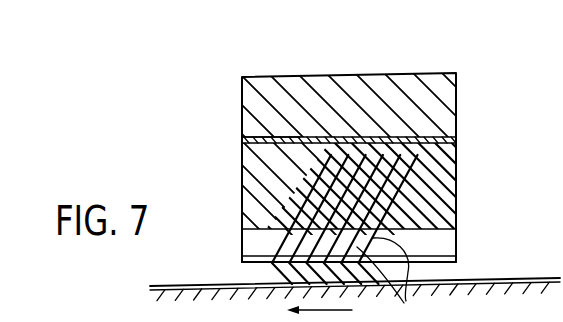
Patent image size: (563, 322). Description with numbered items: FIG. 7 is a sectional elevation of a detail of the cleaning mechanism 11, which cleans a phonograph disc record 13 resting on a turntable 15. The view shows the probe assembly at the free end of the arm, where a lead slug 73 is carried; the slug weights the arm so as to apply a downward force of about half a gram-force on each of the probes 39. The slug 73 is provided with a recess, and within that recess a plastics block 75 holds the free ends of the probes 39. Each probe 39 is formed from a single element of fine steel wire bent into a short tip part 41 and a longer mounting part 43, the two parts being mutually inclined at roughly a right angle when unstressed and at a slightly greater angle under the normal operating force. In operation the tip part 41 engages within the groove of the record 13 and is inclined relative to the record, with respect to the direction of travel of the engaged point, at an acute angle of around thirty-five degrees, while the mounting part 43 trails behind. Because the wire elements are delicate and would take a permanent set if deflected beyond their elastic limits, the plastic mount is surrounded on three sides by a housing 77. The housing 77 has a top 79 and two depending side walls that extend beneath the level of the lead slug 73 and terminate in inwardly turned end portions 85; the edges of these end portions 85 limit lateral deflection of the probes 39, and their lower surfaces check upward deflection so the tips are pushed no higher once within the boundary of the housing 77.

The cleaning mechanism 11 is at (217, 104).
The phonograph disc record 13 is at (543, 270).
The turntable 15 is at (355, 302).
The probes 39 is at (396, 280).
The tip part 41 is at (288, 279).
The mounting part 43 is at (440, 175).
The lead slug 73 is at (447, 102).
The plastics block 75 is at (456, 210).
The housing 77 is at (236, 145).
The top 79 is at (449, 133).
The inwardly turned end portions 85 is at (460, 258).